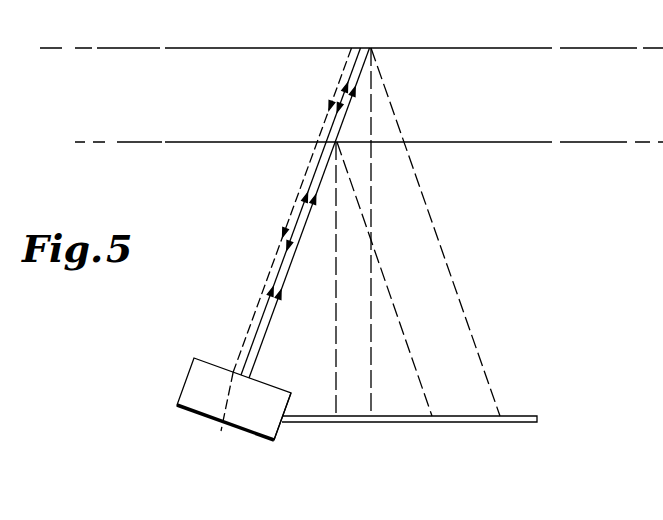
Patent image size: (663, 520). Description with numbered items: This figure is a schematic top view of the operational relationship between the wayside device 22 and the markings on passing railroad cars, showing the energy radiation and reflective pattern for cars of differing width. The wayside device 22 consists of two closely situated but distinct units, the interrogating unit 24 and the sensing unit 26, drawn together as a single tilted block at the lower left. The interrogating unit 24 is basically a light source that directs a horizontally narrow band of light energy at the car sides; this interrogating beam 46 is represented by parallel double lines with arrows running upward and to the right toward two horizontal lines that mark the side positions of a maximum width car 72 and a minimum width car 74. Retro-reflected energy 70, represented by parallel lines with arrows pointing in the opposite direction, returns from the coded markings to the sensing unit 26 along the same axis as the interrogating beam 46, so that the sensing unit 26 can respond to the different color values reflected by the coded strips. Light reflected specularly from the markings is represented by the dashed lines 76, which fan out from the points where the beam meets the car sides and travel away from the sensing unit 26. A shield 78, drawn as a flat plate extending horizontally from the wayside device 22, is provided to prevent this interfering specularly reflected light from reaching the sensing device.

The wayside device 22 is at (223, 424).
The interrogating unit 24 is at (194, 405).
The sensing unit 26 is at (270, 431).
The interrogating beam of light 46 is at (266, 304).
The retro-reflected energy 70 is at (285, 231).
The maximum width car 72 is at (515, 143).
The minimum width car 74 is at (515, 49).
The specularly reflected light 76 is at (452, 277).
The shield 78 is at (538, 421).